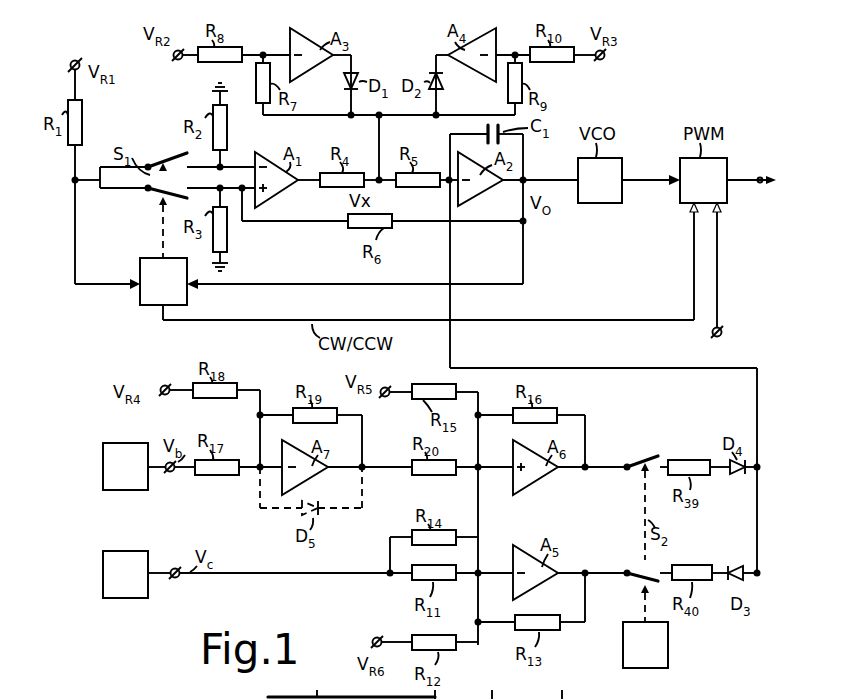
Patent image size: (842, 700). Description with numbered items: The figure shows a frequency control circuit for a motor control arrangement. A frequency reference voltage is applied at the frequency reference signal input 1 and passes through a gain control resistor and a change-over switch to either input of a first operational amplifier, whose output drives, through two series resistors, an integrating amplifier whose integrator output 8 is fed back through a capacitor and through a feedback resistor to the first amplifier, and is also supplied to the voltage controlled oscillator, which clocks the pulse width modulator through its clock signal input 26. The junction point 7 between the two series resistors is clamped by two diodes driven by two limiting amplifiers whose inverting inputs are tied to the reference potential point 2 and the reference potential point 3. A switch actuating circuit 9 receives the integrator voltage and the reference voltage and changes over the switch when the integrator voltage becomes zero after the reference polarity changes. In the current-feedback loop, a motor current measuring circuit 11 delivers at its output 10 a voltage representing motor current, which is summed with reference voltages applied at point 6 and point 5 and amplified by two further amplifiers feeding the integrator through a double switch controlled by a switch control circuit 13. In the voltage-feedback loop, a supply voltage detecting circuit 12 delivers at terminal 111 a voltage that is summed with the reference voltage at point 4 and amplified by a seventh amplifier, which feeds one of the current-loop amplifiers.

The frequency reference signal input 1 is at (70, 65).
The reference potential point 2 is at (175, 61).
The reference potential point 3 is at (604, 61).
The reference voltage terminal VR4 4 is at (167, 386).
The reference voltage terminal VR5 5 is at (386, 398).
The reference voltage terminal VR6 6 is at (377, 637).
The junction point 7 is at (383, 185).
The integrator output 8 is at (528, 179).
The switch actuating circuit 9 is at (158, 306).
The current measuring output 10 is at (177, 579).
The motor current measuring circuit 11 is at (103, 576).
The supply voltage detecting circuit 12 is at (103, 470).
The switch control circuit 13 is at (660, 669).
The clock signal input 26 is at (710, 334).
The input terminal Vb 111 is at (172, 473).